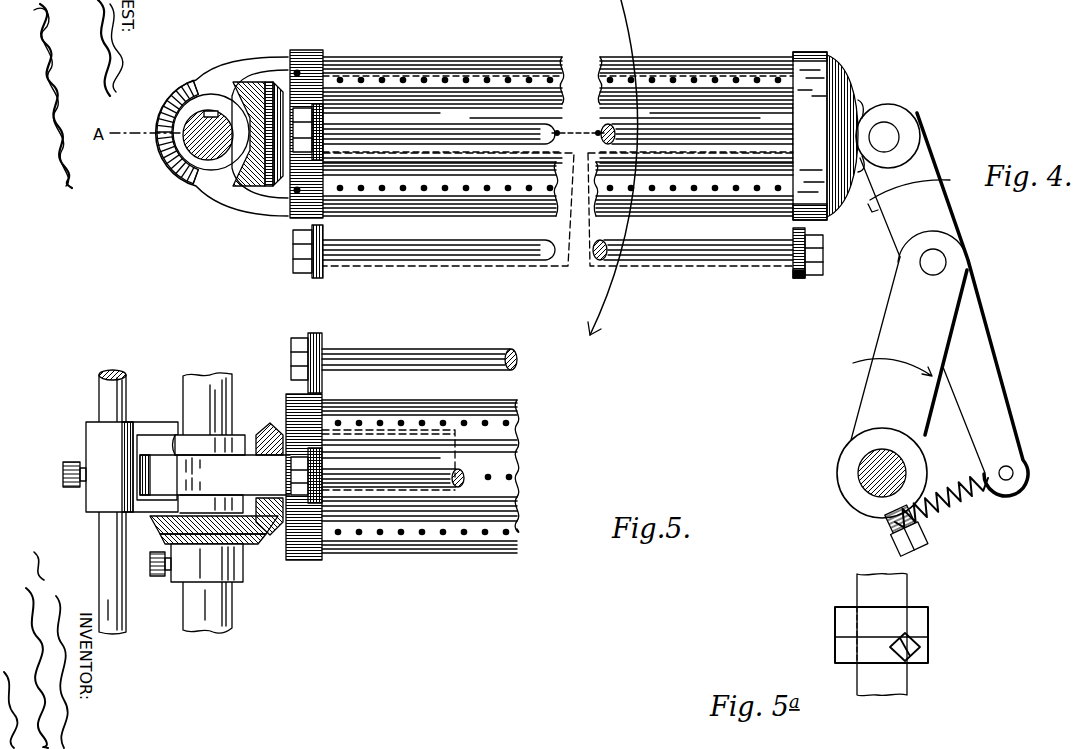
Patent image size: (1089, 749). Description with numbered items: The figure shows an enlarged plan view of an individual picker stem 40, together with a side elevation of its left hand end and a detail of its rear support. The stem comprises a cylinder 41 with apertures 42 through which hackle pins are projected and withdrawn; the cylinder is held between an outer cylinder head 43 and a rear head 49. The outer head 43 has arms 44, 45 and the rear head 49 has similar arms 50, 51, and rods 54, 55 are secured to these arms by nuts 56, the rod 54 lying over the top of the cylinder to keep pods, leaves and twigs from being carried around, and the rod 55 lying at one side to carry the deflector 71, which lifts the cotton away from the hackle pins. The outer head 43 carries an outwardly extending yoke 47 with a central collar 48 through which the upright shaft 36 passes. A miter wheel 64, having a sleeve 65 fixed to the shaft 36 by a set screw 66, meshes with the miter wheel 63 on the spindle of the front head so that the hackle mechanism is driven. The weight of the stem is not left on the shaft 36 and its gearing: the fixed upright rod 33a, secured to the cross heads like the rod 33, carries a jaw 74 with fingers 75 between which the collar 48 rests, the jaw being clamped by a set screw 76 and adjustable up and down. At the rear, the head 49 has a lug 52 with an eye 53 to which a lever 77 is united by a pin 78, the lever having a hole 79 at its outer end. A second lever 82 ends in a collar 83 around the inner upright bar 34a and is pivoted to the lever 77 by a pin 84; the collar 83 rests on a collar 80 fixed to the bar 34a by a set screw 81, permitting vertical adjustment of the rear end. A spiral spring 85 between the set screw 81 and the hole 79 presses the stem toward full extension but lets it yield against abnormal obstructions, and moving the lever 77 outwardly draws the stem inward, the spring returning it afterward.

In FIG. 5, the upright rod 33 is at (99, 569).
In FIG. 5, the upright rod 33a is at (122, 371).
In FIG. 4, the inner upright bar 34a is at (868, 476).
In FIG. 5A, the inner upright bar 34a is at (890, 602).
In FIG. 4, the upright shaft 36 is at (204, 158).
In FIG. 5, the upright shaft 36 is at (226, 404).
In FIG. 4, the picker stem 40 is at (558, 166).
In FIG. 5, the picker stem 40 is at (441, 432).
In FIG. 4, the cylinder 41 is at (428, 61).
In FIG. 5, the cylinder 41 is at (382, 406).
In FIG. 4, the apertures or perforations 42 is at (426, 192).
In FIG. 5, the apertures or perforations 42 is at (468, 532).
In FIG. 4, the outer cylinder head 43 is at (316, 58).
In FIG. 5, the outer cylinder head 43 is at (303, 564).
In FIG. 4, the arm 44 is at (323, 118).
In FIG. 5, the arm 44 is at (318, 349).
In FIG. 4, the arm 45 is at (317, 278).
In FIG. 5, the arm 45 is at (318, 471).
In FIG. 4, the yoke 47 is at (256, 60).
In FIG. 5, the yoke 47 is at (215, 484).
In FIG. 4, the collar 48 is at (178, 152).
In FIG. 5, the collar 48 is at (225, 437).
In FIG. 4, the rear head 49 is at (813, 82).
In FIG. 4, the arm 50 is at (801, 126).
In FIG. 4, the arm 51 is at (799, 278).
In FIG. 4, the lug 52 is at (862, 113).
In FIG. 4, the eye 53 is at (904, 113).
In FIG. 4, the rod 54 is at (478, 129).
In FIG. 5, the rod 54 is at (410, 352).
In FIG. 4, the rod 55 is at (511, 263).
In FIG. 5, the rod 55 is at (466, 478).
In FIG. 4, the nut 56 is at (300, 120).
In FIG. 5, the nut 56 is at (295, 338).
In FIG. 4, the miter wheel 63 is at (262, 182).
In FIG. 5, the miter wheel 63 is at (276, 536).
In FIG. 4, the miter wheel 64 is at (182, 90).
In FIG. 5, the miter wheel 64 is at (252, 548).
In FIG. 5, the sleeve 65 is at (179, 582).
In FIG. 5, the set screw 66 is at (156, 578).
In FIG. 4, the deflector 71 is at (560, 276).
In FIG. 5, the deflector 71 is at (388, 460).
In FIG. 5, the jaw 74 is at (90, 434).
In FIG. 5, the finger 75 is at (145, 423).
In FIG. 5, the set screw 76 is at (68, 482).
In FIG. 4, the lever 77 is at (944, 304).
In FIG. 4, the pin 78 is at (884, 137).
In FIG. 4, the hole 79 is at (1012, 474).
In FIG. 5A, the collar 80 is at (858, 664).
In FIG. 4, the set screw 81 is at (896, 545).
In FIG. 5A, the set screw 81 is at (925, 648).
In FIG. 4, the lever 82 is at (878, 338).
In FIG. 4, the collar 83 is at (850, 452).
In FIG. 5A, the collar 83 is at (845, 632).
In FIG. 4, the pin 84 is at (937, 262).
In FIG. 4, the spiral spring 85 is at (941, 502).